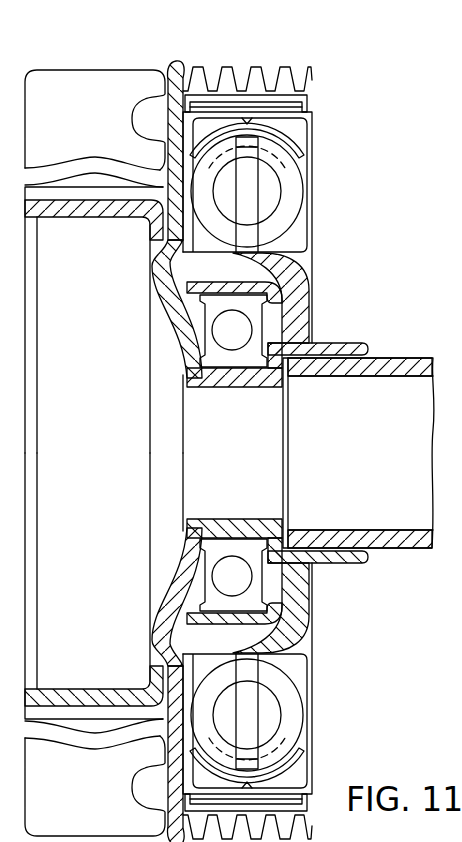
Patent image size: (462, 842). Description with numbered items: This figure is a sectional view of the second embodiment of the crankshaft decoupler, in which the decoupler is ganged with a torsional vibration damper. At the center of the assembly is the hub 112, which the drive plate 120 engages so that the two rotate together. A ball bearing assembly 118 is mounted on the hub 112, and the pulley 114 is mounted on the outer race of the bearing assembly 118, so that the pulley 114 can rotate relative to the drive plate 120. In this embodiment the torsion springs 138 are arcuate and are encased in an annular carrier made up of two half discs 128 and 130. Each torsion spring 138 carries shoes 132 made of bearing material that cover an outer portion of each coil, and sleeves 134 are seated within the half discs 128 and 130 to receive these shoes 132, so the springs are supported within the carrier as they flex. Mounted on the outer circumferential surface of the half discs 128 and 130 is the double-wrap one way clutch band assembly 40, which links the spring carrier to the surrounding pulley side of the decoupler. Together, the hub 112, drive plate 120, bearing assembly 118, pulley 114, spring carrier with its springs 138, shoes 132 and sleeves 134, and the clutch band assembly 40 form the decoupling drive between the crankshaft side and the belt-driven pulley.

The double-wrap one way clutch band assembly 40 is at (307, 103).
The hub 112 is at (370, 343).
The pulley 114 is at (171, 63).
The ball bearing assembly 118 is at (257, 325).
The drive plate 120 is at (312, 278).
The half disc 128 is at (182, 245).
The half disc 130 is at (312, 233).
The shoes 132 is at (300, 166).
The sleeves 134 is at (298, 137).
The torsion springs 138 is at (300, 208).